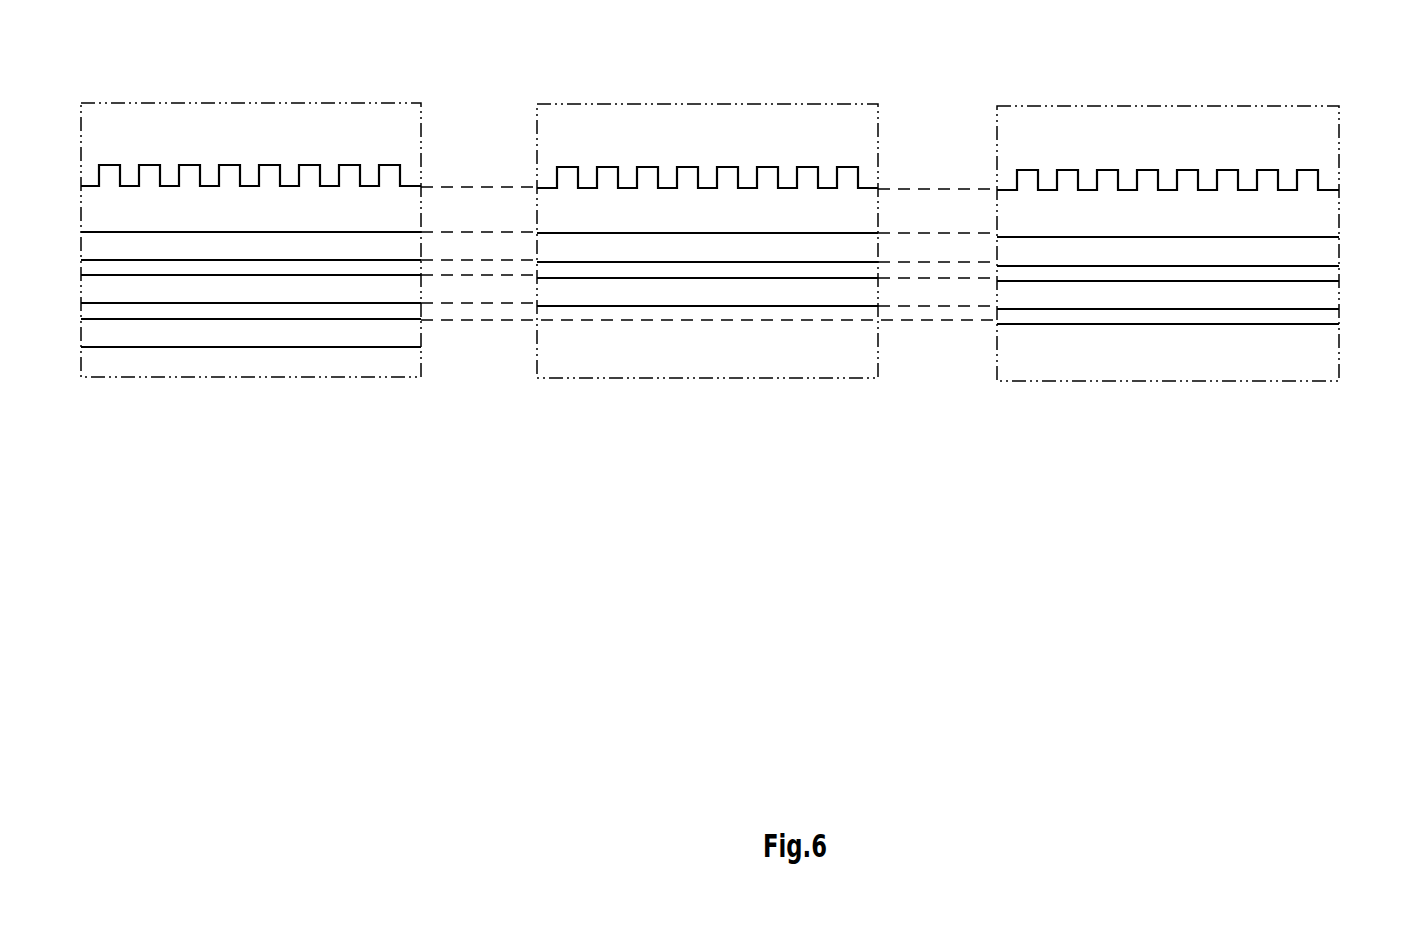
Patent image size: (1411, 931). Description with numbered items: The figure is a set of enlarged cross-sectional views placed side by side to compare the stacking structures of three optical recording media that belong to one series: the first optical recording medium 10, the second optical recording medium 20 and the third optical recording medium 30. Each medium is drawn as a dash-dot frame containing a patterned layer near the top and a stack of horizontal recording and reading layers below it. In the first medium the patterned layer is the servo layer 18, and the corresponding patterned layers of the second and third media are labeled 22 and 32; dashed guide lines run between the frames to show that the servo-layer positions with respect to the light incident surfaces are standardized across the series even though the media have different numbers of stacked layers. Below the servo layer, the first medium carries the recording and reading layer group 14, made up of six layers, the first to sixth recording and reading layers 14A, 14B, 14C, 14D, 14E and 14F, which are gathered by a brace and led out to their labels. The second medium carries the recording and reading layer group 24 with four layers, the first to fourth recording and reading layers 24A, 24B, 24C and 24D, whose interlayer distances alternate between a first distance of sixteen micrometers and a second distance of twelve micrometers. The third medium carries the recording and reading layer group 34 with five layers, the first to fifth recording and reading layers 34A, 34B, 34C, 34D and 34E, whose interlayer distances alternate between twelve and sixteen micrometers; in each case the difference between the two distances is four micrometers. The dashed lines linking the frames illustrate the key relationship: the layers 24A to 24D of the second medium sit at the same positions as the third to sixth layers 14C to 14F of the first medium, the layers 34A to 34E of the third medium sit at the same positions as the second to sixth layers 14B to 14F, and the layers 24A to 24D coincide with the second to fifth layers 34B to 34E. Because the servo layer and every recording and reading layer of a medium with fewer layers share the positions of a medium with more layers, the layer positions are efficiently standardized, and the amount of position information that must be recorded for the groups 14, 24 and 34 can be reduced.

The first optical recording medium 10 is at (252, 92).
The second optical recording medium 20 is at (708, 93).
The third optical recording medium 30 is at (1197, 93).
The servo layer 18 is at (393, 167).
The servo pattern of second unit 22 is at (807, 167).
The servo pattern of third unit 32 is at (1264, 171).
The recording and reading layer group 14 is at (252, 389).
The first recording and reading layer 14A is at (156, 347).
The second recording and reading layer 14B is at (183, 319).
The third recording and reading layer 14C is at (205, 303).
The fourth recording and reading layer 14D is at (223, 275).
The fifth recording and reading layer 14E is at (252, 260).
The sixth recording and reading layer 14F is at (268, 232).
The recording and reading layer group 24 is at (712, 371).
The first recording and reading layer 24A is at (660, 306).
The second recording and reading layer 24B is at (679, 278).
The third recording and reading layer 24C is at (708, 262).
The fourth recording and reading layer 24D is at (725, 233).
The recording and reading layer group 34 is at (1172, 387).
The first recording and reading layer 34A is at (1100, 324).
The second recording and reading layer 34B is at (1121, 309).
The third recording and reading layer 34C is at (1140, 281).
The fourth recording and reading layer 34D is at (1169, 266).
The fifth recording and reading layer 34E is at (1185, 237).